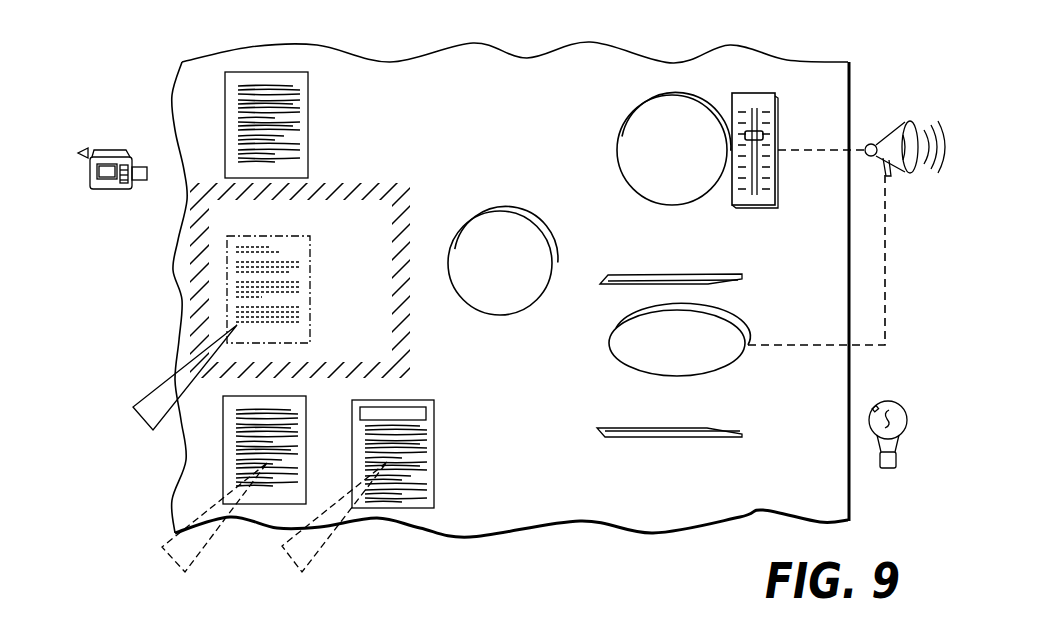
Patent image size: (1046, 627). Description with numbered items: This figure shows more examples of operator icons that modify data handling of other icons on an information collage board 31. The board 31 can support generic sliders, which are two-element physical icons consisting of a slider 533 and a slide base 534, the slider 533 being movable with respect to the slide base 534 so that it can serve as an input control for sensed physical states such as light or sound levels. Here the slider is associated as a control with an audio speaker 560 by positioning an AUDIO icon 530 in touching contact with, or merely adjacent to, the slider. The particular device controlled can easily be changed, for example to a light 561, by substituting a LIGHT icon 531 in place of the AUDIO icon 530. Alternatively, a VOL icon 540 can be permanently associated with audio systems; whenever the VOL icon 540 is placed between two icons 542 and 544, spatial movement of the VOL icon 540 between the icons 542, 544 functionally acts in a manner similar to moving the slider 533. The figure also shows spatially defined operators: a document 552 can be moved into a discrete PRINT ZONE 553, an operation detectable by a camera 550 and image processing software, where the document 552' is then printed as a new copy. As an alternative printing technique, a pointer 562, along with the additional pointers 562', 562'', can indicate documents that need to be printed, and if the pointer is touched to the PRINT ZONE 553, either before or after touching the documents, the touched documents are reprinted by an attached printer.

The board 31 is at (855, 72).
The document 552 is at (260, 107).
The camera 550 is at (110, 156).
The print zone 553 is at (345, 178).
The document image in print zone 552' is at (214, 289).
The pointer 562 is at (179, 377).
The pointer 562' is at (216, 484).
The pointer 562'' is at (358, 488).
The LIGHT icon 531 is at (500, 210).
The AUDIO icon 530 is at (640, 115).
The slider 533 is at (766, 136).
The slide base 534 is at (777, 206).
The audio speaker 560 is at (905, 122).
The icon 542 is at (655, 274).
The icon 544 is at (655, 438).
The VOL icon 540 is at (611, 346).
The light 561 is at (882, 470).